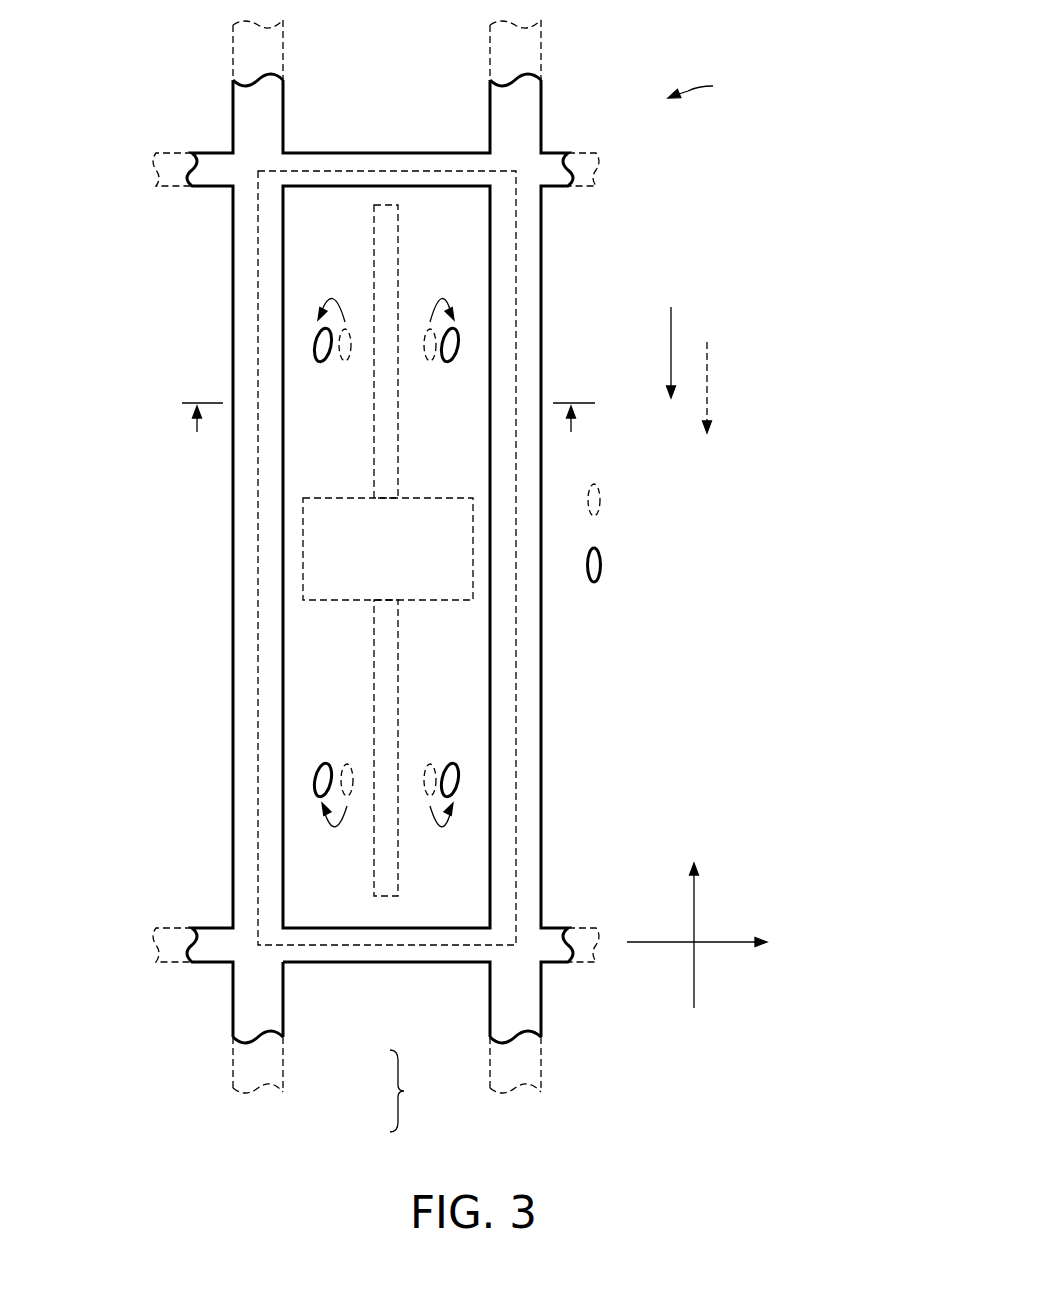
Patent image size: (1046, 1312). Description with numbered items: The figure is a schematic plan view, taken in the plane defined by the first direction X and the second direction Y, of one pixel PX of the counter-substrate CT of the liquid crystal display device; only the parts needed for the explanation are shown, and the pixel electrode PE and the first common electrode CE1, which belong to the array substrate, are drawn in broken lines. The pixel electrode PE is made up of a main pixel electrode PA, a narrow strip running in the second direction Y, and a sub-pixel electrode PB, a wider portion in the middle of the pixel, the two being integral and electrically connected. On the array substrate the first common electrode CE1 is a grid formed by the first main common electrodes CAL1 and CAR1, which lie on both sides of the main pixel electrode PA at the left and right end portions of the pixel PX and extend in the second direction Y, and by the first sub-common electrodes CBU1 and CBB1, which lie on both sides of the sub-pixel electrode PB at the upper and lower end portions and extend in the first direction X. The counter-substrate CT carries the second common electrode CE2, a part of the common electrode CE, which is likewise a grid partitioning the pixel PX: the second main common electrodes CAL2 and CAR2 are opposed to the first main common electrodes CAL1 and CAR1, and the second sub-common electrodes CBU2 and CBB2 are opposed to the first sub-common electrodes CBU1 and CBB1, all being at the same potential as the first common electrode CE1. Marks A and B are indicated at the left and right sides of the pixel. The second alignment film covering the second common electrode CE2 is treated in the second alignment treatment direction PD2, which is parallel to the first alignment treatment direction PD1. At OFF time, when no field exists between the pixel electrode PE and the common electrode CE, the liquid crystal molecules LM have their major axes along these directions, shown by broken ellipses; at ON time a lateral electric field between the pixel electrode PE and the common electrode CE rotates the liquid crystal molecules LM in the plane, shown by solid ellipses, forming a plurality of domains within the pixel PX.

The first main common electrode CAL1 is at (232, 53).
The first main common electrode CAR1 is at (541, 39).
The second main common electrode CAL2 is at (232, 850).
The second main common electrode CAR2 is at (541, 688).
The first sub-common electrode CBU1 is at (172, 190).
The second sub-common electrode CBU2 is at (369, 153).
The first sub-common electrode CBB1 is at (172, 966).
The second sub-common electrode CBB2 is at (390, 962).
The common electrode CE is at (414, 1091).
The first common electrode CE1 is at (293, 1094).
The second common electrode CE2 is at (291, 1025).
The counter-substrate CT is at (706, 78).
The pixel PX is at (521, 159).
The pixel electrode PE is at (390, 550).
The main pixel electrode PA is at (372, 251).
The sub-pixel electrode PB is at (444, 602).
The first alignment treatment direction PD1 is at (712, 356).
The second alignment treatment direction PD2 is at (671, 320).
The liquid crystal molecules LM is at (575, 562).
The section line A is at (202, 433).
The section line B is at (574, 433).
The first direction X is at (709, 941).
The second direction Y is at (693, 918).